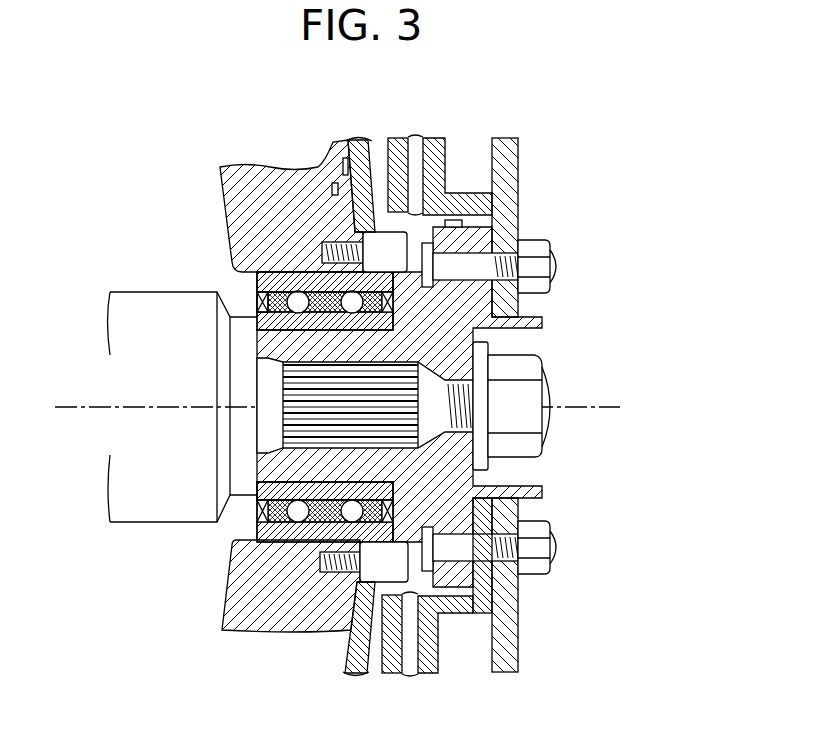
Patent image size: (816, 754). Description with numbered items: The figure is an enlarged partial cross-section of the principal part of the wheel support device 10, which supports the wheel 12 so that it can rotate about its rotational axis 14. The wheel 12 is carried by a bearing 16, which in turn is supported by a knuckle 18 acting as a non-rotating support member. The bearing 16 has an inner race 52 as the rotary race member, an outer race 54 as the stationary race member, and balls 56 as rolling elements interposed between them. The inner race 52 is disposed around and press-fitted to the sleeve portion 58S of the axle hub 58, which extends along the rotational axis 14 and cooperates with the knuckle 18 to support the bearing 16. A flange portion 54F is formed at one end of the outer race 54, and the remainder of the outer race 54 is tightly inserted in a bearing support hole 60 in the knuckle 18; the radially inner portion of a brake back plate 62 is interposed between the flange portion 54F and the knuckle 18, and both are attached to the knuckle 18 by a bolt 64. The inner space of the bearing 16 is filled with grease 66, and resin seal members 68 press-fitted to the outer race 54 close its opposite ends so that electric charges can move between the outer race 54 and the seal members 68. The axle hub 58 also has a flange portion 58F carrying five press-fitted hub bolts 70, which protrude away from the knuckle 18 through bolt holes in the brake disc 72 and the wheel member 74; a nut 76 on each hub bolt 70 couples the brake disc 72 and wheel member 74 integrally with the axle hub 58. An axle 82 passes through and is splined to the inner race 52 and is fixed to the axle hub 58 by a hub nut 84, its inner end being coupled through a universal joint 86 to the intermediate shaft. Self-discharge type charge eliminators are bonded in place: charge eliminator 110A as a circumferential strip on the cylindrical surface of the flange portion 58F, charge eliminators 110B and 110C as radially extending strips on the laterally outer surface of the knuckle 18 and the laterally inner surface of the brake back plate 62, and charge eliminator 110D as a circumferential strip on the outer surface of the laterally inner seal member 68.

The wheel support device 10 is at (205, 327).
The wheel 12 is at (540, 136).
The rotational axis 14 is at (74, 405).
The bearing 16 is at (266, 270).
The knuckle 18 is at (246, 180).
The inner race 52 is at (258, 344).
The outer race 54 is at (298, 283).
The flange portion 54F is at (405, 588).
The balls 56 is at (300, 500).
The axle hub 58 is at (467, 335).
The flange portion 58F is at (490, 235).
The sleeve portion 58S is at (302, 458).
The bearing support hole 60 is at (262, 565).
The brake back plate 62 is at (345, 657).
The bolt 64 is at (440, 612).
The grease 66 is at (262, 590).
The seal members 68 is at (393, 300).
The hub bolts 70 is at (492, 568).
The brake disc 72 is at (445, 158).
The wheel member 74 is at (512, 632).
The nut 76 is at (545, 546).
The axle 82 is at (440, 420).
The hub nut 84 is at (527, 393).
The universal joint 86 is at (125, 290).
The self-discharge type charge eliminator 110A is at (455, 222).
The self-discharge type charge eliminator 110B is at (333, 185).
The self-discharge type charge eliminator 110C is at (345, 158).
The self-discharge type charge eliminator 110D is at (255, 298).